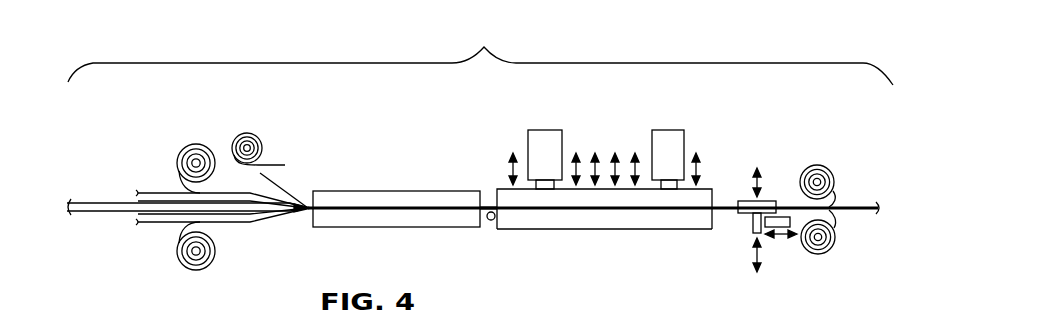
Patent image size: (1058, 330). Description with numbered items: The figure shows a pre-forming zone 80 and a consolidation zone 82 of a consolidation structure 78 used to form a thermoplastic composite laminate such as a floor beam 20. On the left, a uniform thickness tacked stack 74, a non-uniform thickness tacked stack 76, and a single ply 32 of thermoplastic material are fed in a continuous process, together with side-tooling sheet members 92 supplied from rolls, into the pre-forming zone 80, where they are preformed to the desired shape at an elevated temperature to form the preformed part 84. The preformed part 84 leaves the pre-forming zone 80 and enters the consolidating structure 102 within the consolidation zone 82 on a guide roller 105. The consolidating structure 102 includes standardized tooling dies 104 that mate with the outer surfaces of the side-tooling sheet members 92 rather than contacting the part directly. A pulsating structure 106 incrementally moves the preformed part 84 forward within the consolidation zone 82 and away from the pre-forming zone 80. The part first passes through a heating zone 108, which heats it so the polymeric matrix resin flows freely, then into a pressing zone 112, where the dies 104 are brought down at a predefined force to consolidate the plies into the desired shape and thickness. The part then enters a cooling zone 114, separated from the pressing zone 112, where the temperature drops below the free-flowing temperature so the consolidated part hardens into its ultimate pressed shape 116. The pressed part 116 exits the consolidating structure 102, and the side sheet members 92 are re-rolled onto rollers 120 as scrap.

The floor beam 20 is at (853, 207).
The single ply 32 is at (247, 133).
The uniform thickness tacked stack 74 is at (138, 193).
The non-uniform thickness tacked stack 76 is at (78, 203).
The consolidation structure 78 is at (480, 53).
The pre-forming zone 80 is at (378, 152).
The consolidation zone 82 is at (608, 130).
The preformed part 84 is at (485, 205).
The side-tooling sheet members 92 is at (182, 150).
The consolidating structure 102 is at (528, 137).
The standardized tooling dies 104 is at (700, 188).
The guide roller 105 is at (491, 220).
The pulsating structure 106 is at (767, 200).
The heating zone 108 is at (542, 217).
The pressing zone 112 is at (618, 230).
The cooling zone 114 is at (682, 230).
The pressed part 116 is at (727, 212).
The rollers 120 is at (817, 165).